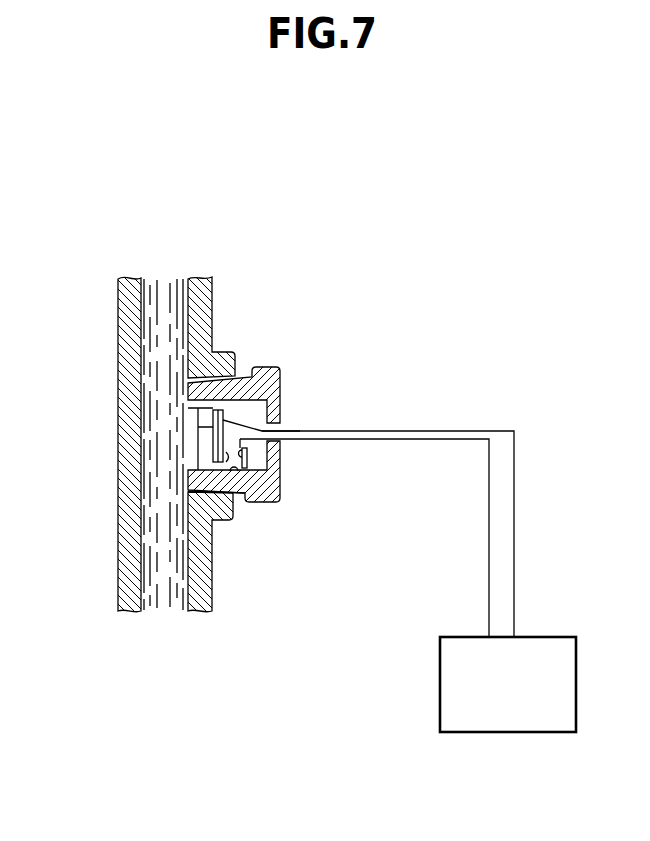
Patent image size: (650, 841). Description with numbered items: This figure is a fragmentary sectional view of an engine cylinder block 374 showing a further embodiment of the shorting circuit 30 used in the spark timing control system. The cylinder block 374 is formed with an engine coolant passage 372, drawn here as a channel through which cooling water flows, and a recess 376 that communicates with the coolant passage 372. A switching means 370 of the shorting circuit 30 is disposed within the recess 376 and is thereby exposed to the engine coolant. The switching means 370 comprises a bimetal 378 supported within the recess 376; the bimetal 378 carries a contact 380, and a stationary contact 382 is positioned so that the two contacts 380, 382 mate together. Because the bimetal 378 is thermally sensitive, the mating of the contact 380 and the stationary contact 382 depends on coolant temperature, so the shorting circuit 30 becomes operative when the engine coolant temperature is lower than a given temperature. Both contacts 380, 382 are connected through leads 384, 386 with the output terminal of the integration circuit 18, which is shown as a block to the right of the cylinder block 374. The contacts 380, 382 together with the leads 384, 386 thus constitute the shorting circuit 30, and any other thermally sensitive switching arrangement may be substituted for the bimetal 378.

The integration circuit 18 is at (577, 668).
The shorting circuit 30 is at (394, 426).
The switching means 370 is at (237, 414).
The engine coolant passage 372 is at (148, 331).
The engine cylinder block 374 is at (118, 439).
The recess 376 is at (239, 497).
The bimetal 378 is at (213, 449).
The contact 380 is at (189, 492).
The stationary contact 382 is at (241, 466).
The lead 384 is at (460, 431).
The lead 386 is at (457, 441).